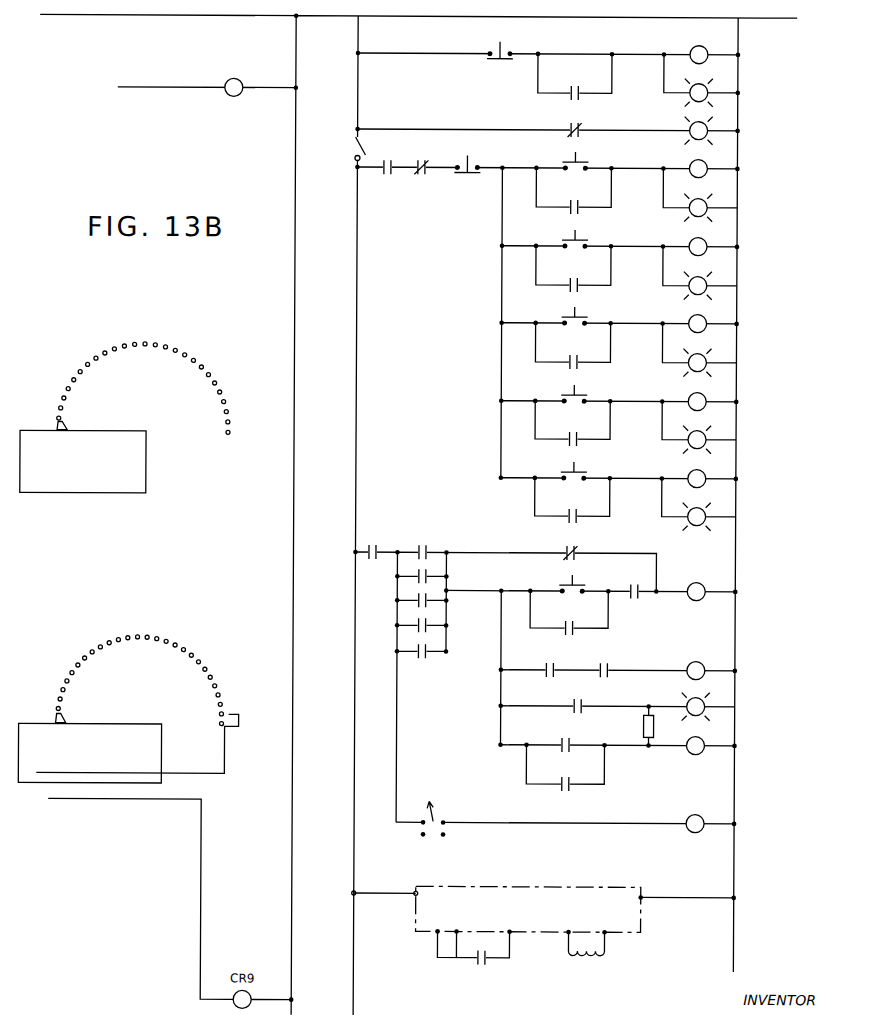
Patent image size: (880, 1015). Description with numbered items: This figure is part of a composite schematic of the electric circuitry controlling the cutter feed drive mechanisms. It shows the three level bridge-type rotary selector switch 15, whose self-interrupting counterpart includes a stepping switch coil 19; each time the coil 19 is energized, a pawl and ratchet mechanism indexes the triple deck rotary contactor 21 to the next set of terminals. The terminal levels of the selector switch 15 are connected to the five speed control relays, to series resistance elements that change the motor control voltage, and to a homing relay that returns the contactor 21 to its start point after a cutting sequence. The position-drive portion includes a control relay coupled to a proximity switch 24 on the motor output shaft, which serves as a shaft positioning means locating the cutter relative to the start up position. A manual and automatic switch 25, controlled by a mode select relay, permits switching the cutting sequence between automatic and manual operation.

The bridge-type rotary selector switch 15 is at (303, 1014).
The stepping switch coil 19 is at (238, 79).
The triple deck rotary contactor 21 is at (93, 431).
The proximity switch 24 is at (560, 748).
The manual and automatic switch 25 is at (421, 827).